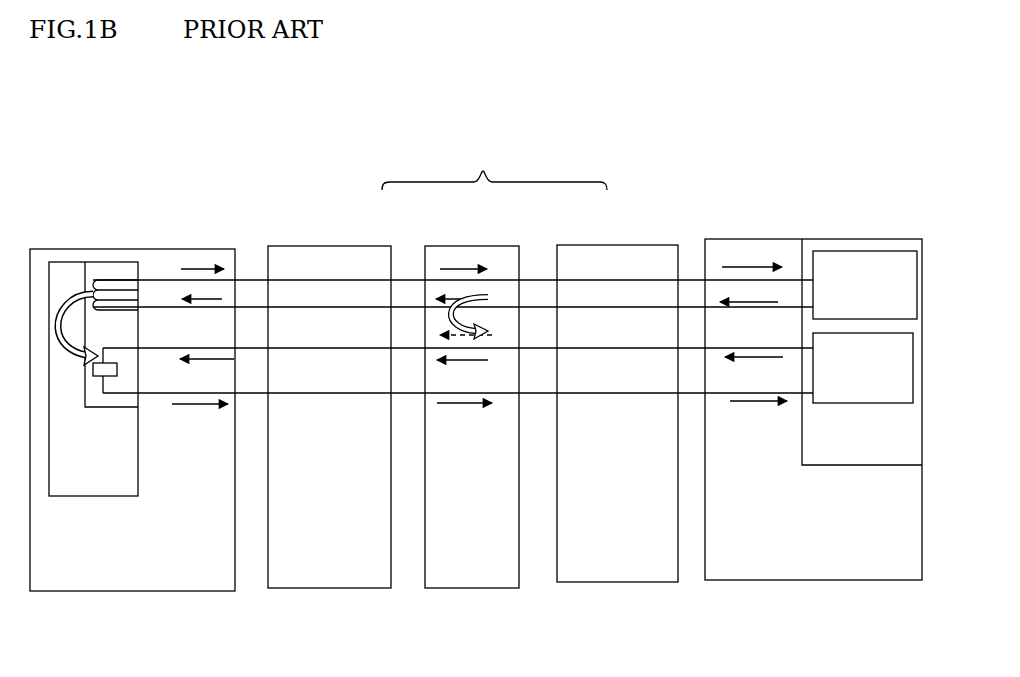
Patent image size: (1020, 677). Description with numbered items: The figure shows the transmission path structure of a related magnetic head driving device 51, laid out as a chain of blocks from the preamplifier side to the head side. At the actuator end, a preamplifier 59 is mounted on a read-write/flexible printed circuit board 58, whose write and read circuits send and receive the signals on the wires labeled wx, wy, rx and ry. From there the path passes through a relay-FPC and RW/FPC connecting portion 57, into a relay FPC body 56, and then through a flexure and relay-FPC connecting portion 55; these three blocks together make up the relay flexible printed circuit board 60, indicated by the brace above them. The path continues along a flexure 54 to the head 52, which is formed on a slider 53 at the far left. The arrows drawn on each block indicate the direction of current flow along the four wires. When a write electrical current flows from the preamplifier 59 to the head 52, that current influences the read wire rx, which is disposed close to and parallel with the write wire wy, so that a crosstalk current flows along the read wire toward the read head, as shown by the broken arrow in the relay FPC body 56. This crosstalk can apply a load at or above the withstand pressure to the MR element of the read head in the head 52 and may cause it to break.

The magnetic head driving device 51 is at (843, 196).
The head 52 is at (84, 368).
The slider 53 is at (138, 463).
The flexure 54 is at (173, 248).
The flexure and relay-FPC connecting portion 55 is at (315, 246).
The relay FPC body 56 is at (440, 246).
The relay-FPC and RW/FPC connecting portion 57 is at (573, 245).
The read-write/flexible printed circuit board 58 is at (735, 238).
The preamplifier 59 is at (800, 433).
The relay flexible printed circuit board 60 is at (488, 161).